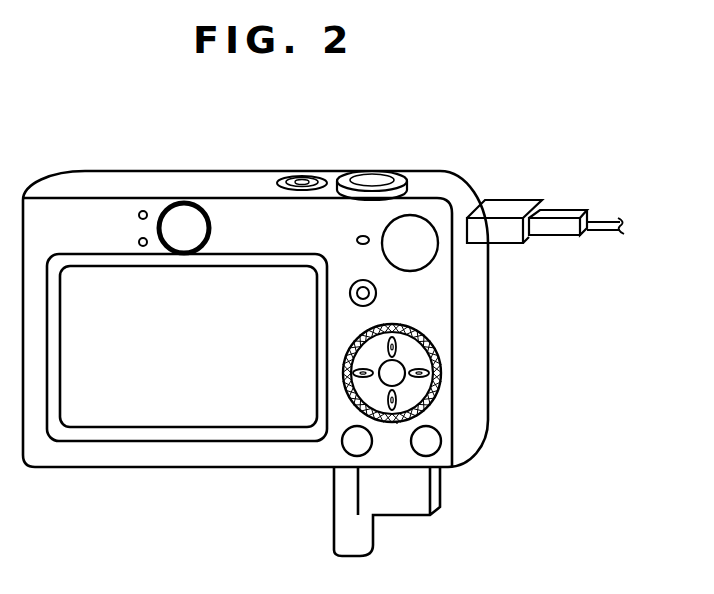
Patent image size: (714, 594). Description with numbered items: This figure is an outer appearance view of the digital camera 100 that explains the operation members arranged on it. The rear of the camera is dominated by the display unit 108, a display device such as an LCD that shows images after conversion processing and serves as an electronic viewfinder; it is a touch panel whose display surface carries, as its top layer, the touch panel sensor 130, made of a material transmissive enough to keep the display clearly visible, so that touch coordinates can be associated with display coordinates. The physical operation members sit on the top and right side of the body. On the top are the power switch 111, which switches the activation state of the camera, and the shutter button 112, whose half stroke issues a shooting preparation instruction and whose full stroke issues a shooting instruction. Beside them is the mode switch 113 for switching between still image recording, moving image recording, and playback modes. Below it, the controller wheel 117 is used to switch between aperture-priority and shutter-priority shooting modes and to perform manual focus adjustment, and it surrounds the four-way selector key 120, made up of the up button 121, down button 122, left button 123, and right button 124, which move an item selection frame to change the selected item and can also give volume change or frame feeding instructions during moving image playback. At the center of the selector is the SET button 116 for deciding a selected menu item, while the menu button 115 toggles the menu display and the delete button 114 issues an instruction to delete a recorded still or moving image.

The digital camera 100 is at (93, 490).
The display unit 108 is at (187, 281).
The touch panel sensor 130 is at (117, 292).
The power switch 111 is at (302, 176).
The shutter button 112 is at (372, 171).
The mode switch 113 is at (413, 228).
The delete button 114 is at (428, 443).
The menu button 115 is at (343, 442).
The SET button 116 is at (395, 375).
The controller wheel 117 is at (430, 342).
The four-way selector key 120 is at (408, 397).
The up button 121 is at (395, 323).
The down button 122 is at (397, 422).
The left button 123 is at (353, 371).
The right button 124 is at (430, 372).